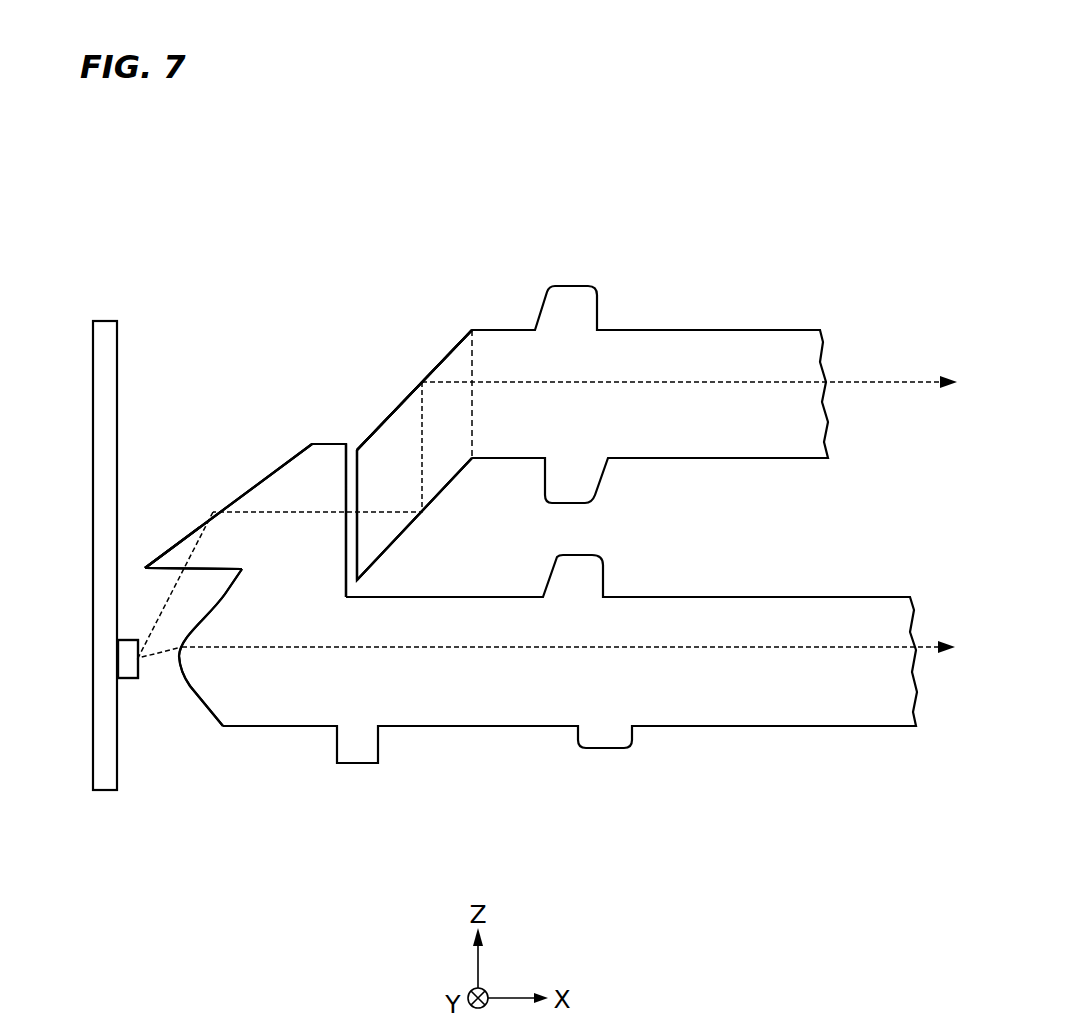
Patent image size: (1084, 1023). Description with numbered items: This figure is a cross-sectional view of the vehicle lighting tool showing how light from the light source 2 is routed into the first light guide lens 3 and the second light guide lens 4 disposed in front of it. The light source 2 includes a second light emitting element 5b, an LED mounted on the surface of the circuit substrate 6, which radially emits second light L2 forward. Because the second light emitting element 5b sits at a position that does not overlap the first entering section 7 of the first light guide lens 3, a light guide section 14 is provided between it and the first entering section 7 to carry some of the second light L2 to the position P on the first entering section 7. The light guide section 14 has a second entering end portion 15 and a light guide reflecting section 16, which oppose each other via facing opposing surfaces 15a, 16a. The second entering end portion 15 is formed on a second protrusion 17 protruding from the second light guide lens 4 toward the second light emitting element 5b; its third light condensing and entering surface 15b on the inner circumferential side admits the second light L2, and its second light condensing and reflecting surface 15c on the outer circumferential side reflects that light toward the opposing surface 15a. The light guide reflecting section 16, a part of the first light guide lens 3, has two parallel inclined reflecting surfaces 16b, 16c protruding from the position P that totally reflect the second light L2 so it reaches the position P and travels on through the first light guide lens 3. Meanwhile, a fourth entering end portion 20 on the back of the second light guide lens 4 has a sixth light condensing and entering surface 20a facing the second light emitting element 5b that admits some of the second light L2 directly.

The light source 2 is at (136, 768).
The first light guide lens 3 is at (700, 328).
The second light guide lens 4 is at (742, 727).
The second light emitting element 5b is at (127, 683).
The circuit substrate 6 is at (107, 327).
The first entering section 7 is at (436, 310).
The light guide section 14 is at (308, 371).
The second entering end portion 15 is at (132, 346).
The opposing surface 15a is at (345, 534).
The third light condensing and entering surface 15b is at (172, 568).
The second light condensing and reflecting surface 15c is at (243, 492).
The light guide reflecting section 16 is at (260, 223).
The opposing surface 16a is at (357, 472).
The inclined reflecting surface 16b is at (400, 533).
The inclined reflecting surface 16c is at (386, 429).
The second protrusion 17 is at (157, 543).
The fourth entering end portion 20 is at (216, 711).
The sixth light condensing and entering surface 20a is at (175, 690).
The position P is at (472, 362).
The second light L2 is at (885, 382).